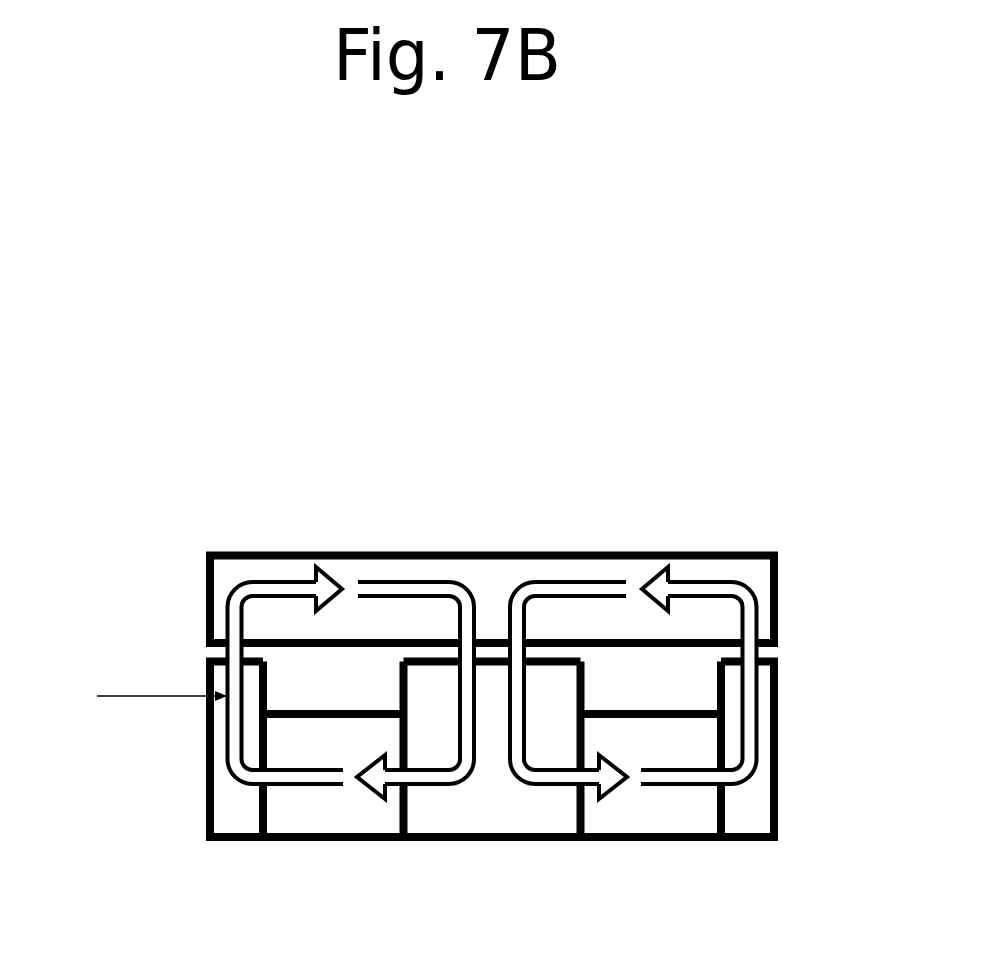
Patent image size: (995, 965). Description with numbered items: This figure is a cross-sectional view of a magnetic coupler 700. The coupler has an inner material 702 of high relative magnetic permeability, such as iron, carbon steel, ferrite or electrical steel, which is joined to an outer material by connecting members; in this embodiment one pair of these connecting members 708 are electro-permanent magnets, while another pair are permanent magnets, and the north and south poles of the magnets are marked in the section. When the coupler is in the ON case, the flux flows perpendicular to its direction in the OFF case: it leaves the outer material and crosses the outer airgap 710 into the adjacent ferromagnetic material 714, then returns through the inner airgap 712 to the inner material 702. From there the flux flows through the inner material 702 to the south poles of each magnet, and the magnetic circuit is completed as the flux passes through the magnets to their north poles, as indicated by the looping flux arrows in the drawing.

The magnetic coupler 700 is at (152, 182).
The inner material 702 is at (392, 813).
The connecting member 708 is at (203, 802).
The outer airgap 710 is at (203, 649).
The inner airgap 712 is at (567, 645).
The adjacent ferromagnetic material 714 is at (497, 552).